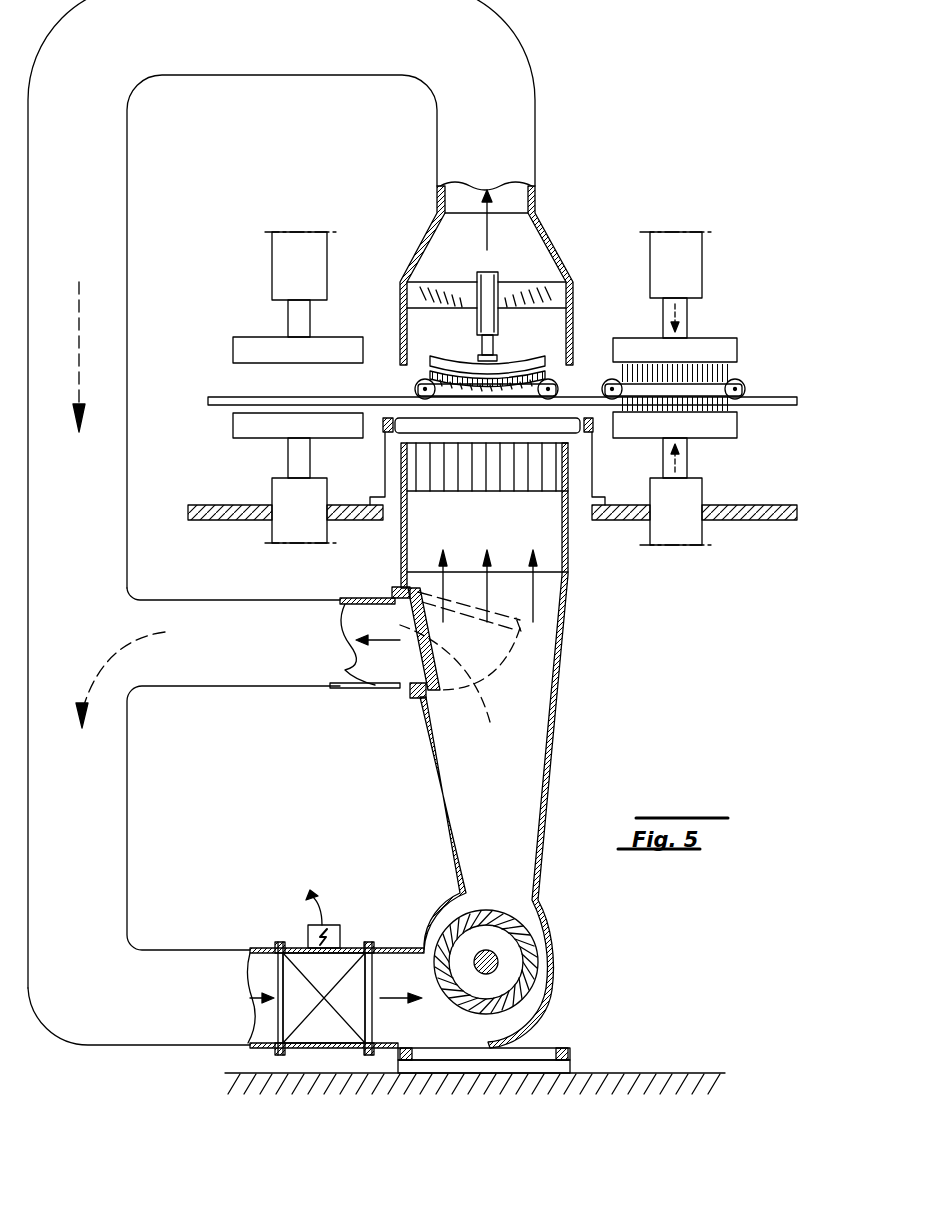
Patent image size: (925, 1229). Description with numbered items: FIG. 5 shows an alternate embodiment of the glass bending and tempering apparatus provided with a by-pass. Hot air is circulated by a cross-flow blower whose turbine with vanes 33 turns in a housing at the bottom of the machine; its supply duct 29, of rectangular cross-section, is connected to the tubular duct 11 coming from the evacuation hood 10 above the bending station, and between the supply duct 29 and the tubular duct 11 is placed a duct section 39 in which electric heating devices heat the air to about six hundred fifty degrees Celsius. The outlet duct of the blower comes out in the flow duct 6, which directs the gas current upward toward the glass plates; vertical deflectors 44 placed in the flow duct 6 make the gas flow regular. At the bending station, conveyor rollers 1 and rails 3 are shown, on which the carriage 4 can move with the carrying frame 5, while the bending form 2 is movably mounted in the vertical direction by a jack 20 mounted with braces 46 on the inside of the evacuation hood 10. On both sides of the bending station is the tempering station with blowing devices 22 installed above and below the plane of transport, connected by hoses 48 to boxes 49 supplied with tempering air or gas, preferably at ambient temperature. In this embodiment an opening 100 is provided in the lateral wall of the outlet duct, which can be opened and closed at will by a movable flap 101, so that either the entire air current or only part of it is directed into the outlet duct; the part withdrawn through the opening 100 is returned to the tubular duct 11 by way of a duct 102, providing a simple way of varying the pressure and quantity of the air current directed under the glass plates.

The conveyor rollers 1 is at (406, 418).
The bending form 2 is at (524, 360).
The rails 3 is at (770, 398).
The carriage 4 is at (474, 374).
The carrying frame 5 is at (446, 364).
The flow duct 6 is at (556, 548).
The evacuation hood 10 is at (548, 256).
The tubular duct 11 is at (276, 54).
The jack 20 is at (482, 282).
The blowing devices 22 is at (240, 352).
The supply duct 29 is at (396, 1030).
The vanes 33 is at (472, 1016).
The duct section 39 is at (332, 1034).
The vertical deflectors 44 is at (565, 470).
The braces 46 is at (422, 288).
The hoses 48 is at (300, 318).
The boxes 49 is at (274, 266).
The opening 100 is at (420, 664).
The movable flap 101 is at (420, 626).
The duct 102 is at (228, 665).